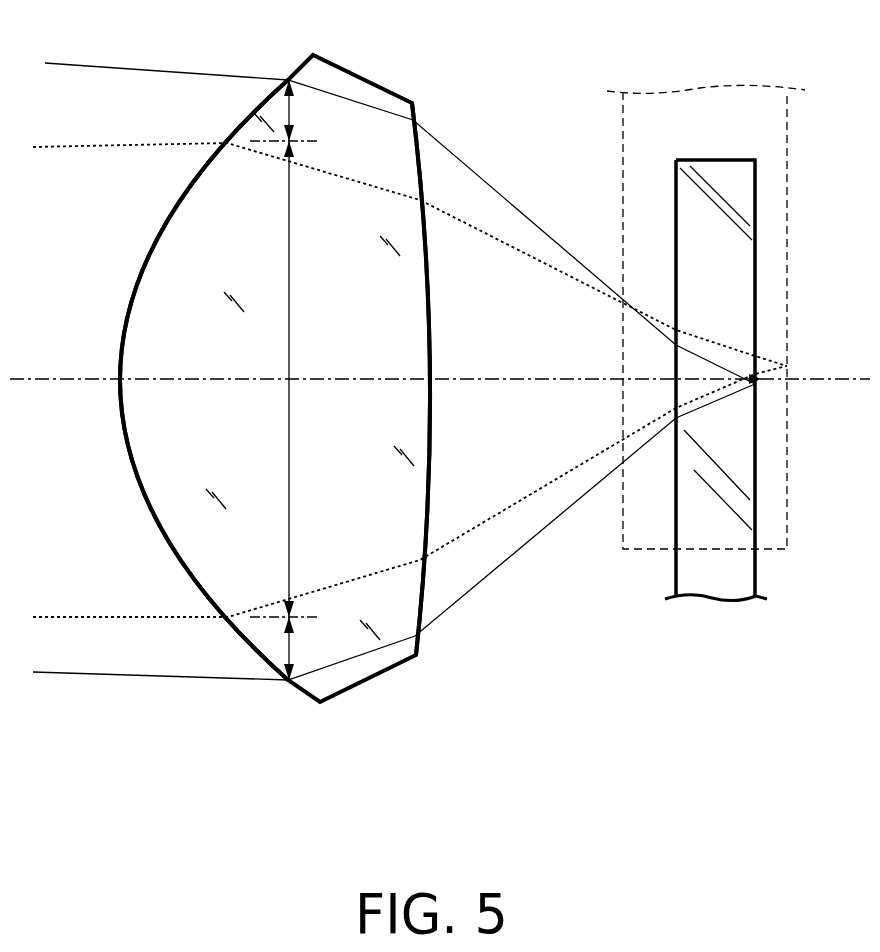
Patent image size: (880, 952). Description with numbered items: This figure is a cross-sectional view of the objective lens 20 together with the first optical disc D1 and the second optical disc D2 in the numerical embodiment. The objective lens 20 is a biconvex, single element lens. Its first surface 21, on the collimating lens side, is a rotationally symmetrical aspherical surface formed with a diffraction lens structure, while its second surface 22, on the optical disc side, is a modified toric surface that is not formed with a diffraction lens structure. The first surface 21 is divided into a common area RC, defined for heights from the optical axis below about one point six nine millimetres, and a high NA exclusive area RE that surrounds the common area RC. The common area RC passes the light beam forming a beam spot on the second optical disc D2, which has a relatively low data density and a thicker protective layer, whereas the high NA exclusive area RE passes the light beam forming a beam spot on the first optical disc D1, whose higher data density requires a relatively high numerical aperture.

The objective lens 20 is at (188, 260).
The first surface 21 is at (164, 534).
The second surface 22 is at (430, 463).
The first optical disc D1 is at (718, 583).
The second optical disc D2 is at (709, 106).
The high NA exclusive area RE is at (287, 380).
The common area RC is at (305, 379).